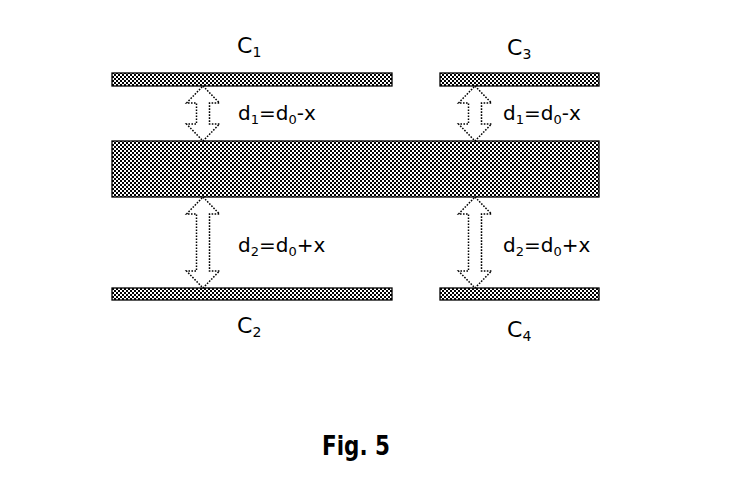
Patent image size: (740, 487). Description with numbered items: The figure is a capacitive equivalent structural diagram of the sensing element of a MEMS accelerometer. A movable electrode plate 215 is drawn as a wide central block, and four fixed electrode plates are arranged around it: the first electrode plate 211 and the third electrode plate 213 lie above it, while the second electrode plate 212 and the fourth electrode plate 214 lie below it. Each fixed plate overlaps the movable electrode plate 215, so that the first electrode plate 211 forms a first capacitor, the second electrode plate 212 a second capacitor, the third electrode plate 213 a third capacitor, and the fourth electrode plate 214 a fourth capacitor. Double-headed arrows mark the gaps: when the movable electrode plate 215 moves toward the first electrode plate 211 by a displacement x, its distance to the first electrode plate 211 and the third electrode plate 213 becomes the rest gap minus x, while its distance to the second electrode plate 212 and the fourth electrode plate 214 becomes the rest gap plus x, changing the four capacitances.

The first electrode plate 211 is at (135, 77).
The second electrode plate 212 is at (122, 292).
The third electrode plate 213 is at (585, 80).
The fourth electrode plate 214 is at (589, 290).
The movable electrode plate 215 is at (115, 150).